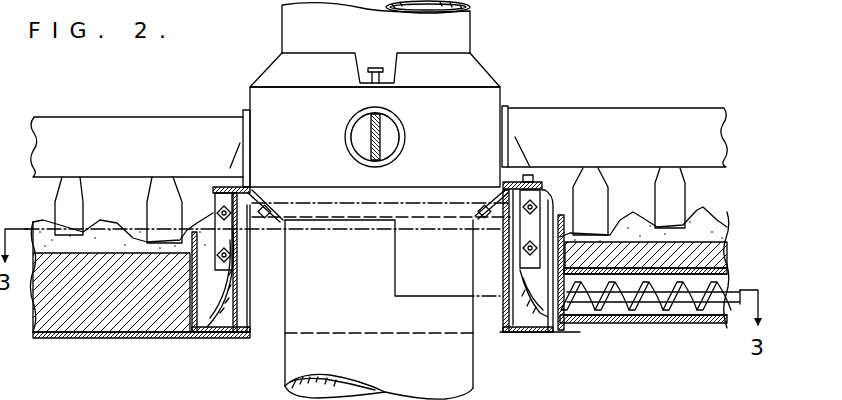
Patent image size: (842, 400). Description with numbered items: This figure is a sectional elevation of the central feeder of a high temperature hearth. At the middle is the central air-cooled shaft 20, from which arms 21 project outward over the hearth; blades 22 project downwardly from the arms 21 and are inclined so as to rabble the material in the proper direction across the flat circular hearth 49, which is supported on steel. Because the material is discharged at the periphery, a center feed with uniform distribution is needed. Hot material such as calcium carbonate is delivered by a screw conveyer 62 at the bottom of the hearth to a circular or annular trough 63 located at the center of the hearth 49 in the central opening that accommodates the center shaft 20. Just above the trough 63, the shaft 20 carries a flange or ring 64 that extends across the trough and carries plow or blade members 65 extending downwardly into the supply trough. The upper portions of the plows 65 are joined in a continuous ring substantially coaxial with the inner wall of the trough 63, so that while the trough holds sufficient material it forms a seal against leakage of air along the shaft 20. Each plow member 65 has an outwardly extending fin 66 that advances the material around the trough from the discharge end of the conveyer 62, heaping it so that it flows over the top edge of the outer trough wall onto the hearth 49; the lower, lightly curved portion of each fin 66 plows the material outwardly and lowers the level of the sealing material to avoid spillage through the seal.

The central air-cooled shaft 20 is at (470, 30).
The arms 21 is at (137, 122).
The blades 22 is at (152, 193).
The flat circular hearth 49 is at (132, 322).
The screw conveyer 62 is at (675, 303).
The circular or annular trough 63 is at (218, 337).
The flange or ring 64 is at (233, 187).
The plow or blade members 65 is at (515, 237).
The fin 66 is at (221, 308).